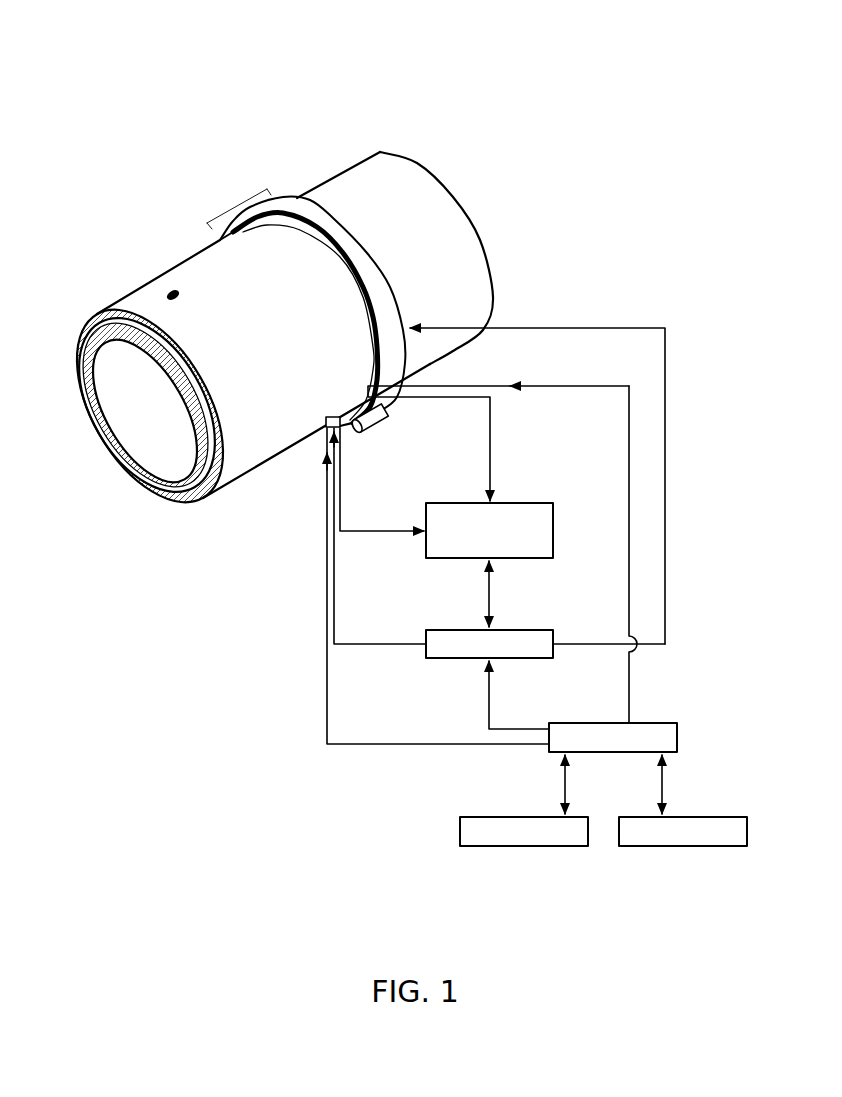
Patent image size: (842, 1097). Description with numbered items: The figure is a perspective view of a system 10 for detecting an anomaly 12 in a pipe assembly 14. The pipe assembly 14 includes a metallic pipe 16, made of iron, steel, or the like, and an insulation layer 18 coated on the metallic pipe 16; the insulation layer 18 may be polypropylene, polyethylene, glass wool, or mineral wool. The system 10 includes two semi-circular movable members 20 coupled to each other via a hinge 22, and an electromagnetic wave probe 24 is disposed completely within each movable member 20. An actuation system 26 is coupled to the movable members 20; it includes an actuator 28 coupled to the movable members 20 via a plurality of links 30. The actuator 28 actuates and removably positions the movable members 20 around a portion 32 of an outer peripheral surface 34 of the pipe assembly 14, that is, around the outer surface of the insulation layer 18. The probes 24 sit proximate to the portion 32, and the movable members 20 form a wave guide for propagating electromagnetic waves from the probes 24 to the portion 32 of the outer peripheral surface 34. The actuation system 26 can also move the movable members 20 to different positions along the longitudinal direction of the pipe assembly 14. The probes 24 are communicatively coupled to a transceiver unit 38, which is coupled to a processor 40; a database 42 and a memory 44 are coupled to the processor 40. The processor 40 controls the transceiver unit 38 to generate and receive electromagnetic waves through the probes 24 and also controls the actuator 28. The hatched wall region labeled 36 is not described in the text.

The system 10 is at (118, 64).
The anomaly 12 is at (170, 291).
The pipe assembly 14 is at (357, 150).
The metallic pipe 16 is at (73, 380).
The insulation layer 18 is at (85, 331).
The movable members 20 is at (276, 190).
The hinge 22 is at (375, 426).
The electromagnetic wave probe 24 is at (350, 418).
The actuation system 26 is at (524, 666).
The actuator 28 is at (555, 656).
The links 30 is at (667, 380).
The portion 32 is at (236, 209).
The outer peripheral surface 34 is at (249, 457).
The wall 36 is at (187, 370).
The transceiver unit 38 is at (556, 530).
The processor 40 is at (680, 737).
The database 42 is at (683, 848).
The memory 44 is at (522, 848).